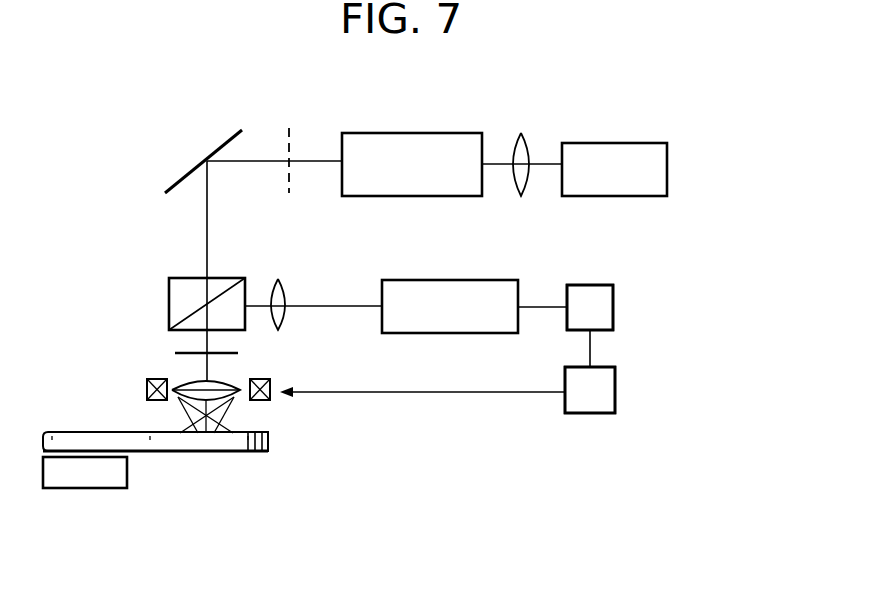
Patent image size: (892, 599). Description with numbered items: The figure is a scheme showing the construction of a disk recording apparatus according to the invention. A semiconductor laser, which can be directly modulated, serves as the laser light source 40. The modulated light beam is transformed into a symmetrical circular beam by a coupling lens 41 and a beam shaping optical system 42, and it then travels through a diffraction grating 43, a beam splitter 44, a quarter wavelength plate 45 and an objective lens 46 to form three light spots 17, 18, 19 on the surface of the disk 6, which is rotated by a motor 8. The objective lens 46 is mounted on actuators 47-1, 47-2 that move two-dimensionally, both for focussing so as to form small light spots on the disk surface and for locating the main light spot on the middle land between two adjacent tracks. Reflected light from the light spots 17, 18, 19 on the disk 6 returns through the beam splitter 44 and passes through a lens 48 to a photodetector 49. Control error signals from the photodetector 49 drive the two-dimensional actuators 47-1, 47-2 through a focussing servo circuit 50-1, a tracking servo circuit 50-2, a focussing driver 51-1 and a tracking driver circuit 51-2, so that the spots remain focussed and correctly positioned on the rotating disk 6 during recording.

The disk 6 is at (90, 432).
The motor 8 is at (100, 489).
The light spot 17 is at (206, 433).
The light spot 18 is at (190, 433).
The light spot 19 is at (233, 433).
The laser light source 40 is at (629, 143).
The coupling lens 41 is at (522, 136).
The beam shaping optical system 42 is at (439, 133).
The diffraction grating 43 is at (290, 133).
The beam splitter 44 is at (236, 280).
The 1/4 wavelength plate 45 is at (229, 345).
The objective lens 46 is at (232, 382).
The actuator 47-1 is at (271, 393).
The actuator 47-2 is at (297, 418).
The lens 48 is at (286, 292).
The photodetector 49 is at (498, 280).
The focussing servo circuit 50-1 is at (577, 285).
The tracking servo circuit 50-2 is at (675, 288).
The focussing driver 51-1 is at (565, 409).
The tracking driver circuit 51-2 is at (666, 434).